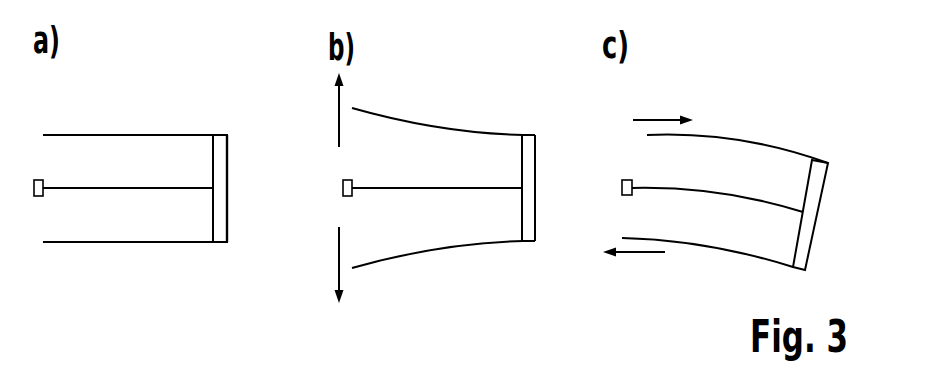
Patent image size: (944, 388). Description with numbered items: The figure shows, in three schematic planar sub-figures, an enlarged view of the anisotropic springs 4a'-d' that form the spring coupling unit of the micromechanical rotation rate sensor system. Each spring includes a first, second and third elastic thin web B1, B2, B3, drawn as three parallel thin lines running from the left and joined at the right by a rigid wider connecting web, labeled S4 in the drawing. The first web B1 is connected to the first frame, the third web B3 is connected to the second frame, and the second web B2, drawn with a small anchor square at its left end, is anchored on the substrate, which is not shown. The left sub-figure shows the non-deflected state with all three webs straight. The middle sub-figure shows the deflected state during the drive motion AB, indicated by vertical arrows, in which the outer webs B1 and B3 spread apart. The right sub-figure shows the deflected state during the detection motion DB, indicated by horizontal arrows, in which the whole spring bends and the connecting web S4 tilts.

The anisotropic springs 4a'-d' is at (492, 66).
The first elastic thin web B1 is at (73, 134).
The second elastic thin web B2 is at (112, 187).
The third elastic thin web B3 is at (112, 241).
The end section / connecting segment S4 is at (220, 230).
The drive motion AB is at (362, 88).
The detection motion DB is at (650, 118).